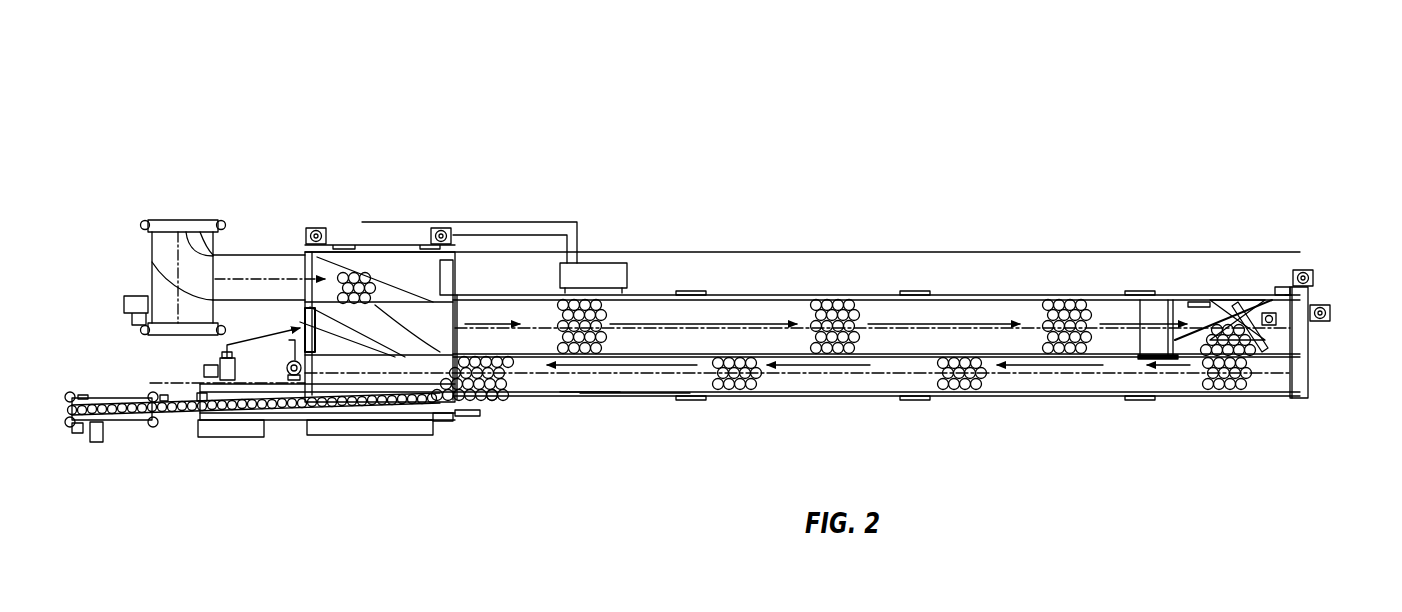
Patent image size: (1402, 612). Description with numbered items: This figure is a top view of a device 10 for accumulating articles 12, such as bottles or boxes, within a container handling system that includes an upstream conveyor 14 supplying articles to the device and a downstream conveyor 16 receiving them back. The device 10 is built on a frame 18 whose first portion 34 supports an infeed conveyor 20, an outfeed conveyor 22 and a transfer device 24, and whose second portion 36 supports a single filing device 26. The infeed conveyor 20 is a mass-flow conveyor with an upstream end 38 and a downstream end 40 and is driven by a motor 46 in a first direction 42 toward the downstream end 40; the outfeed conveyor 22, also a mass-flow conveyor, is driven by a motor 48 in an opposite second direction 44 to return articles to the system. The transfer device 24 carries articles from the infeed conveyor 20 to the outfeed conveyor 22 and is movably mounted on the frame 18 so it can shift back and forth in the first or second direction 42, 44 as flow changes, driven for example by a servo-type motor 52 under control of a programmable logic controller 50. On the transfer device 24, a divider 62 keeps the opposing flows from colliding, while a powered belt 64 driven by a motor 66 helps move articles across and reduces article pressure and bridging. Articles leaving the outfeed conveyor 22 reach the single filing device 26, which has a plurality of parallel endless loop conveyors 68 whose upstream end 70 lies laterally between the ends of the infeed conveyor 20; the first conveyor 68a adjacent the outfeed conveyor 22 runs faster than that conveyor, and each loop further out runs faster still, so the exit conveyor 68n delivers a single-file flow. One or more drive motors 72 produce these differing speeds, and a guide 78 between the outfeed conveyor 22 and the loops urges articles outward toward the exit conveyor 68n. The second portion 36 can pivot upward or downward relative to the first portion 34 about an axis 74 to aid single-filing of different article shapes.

The device 10 is at (948, 100).
The articles 12 is at (605, 318).
The upstream conveyor 14 is at (166, 228).
The downstream conveyor 16 is at (68, 408).
The frame 18 is at (632, 397).
The infeed conveyor 20 is at (870, 300).
The outfeed conveyor 22 is at (860, 383).
The transfer device 24 is at (1233, 285).
The single filing device 26 is at (407, 428).
The first portion 34 is at (592, 398).
The second portion 36 is at (442, 420).
The upstream end 38 is at (325, 345).
The downstream end 40 is at (1287, 320).
The first direction 42 is at (970, 322).
The second direction 44 is at (1048, 362).
The motor 46 is at (1307, 270).
The motor 48 is at (288, 366).
The programmable logic controller 50 is at (600, 262).
The motor 52 is at (1328, 320).
The divider 62 is at (1138, 358).
The powered belt 64 is at (1260, 340).
The motor 66 is at (1277, 320).
The endless loop conveyors 68 is at (340, 420).
The first conveyor 68a is at (498, 385).
The exit conveyor 68n is at (465, 400).
The upstream end 70 is at (455, 405).
The drive motors 72 is at (218, 358).
The axis 74 is at (168, 380).
The guide 78 is at (368, 392).